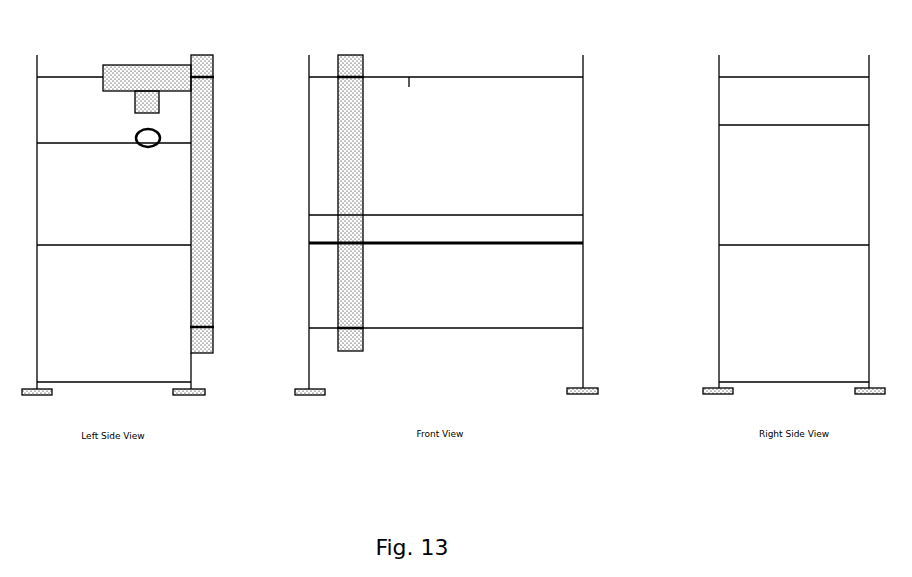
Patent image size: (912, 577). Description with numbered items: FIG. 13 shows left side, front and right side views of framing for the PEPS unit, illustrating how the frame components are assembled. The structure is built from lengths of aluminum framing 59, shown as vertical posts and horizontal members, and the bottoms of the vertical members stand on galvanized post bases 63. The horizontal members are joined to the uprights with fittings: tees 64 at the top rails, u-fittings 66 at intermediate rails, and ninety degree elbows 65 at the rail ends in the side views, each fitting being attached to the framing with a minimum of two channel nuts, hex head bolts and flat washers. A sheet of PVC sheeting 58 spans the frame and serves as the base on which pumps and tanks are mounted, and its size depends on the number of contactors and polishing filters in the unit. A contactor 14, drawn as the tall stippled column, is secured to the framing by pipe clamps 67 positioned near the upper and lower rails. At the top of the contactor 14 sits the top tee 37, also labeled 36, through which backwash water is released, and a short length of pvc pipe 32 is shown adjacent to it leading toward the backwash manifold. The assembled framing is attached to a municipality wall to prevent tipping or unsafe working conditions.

The contactor 14 is at (364, 173).
The pvc pipe 32 is at (137, 131).
The cap 36 is at (172, 69).
The top tee 37 is at (146, 62).
The PVC sheeting 58 is at (123, 384).
The aluminum framing 59 is at (308, 126).
The galvanized post base 63 is at (314, 387).
The tee 64 is at (308, 76).
The 90 degree elbow 65 is at (190, 145).
The u-fitting 66 is at (308, 218).
The pipe clamp 67 is at (351, 80).